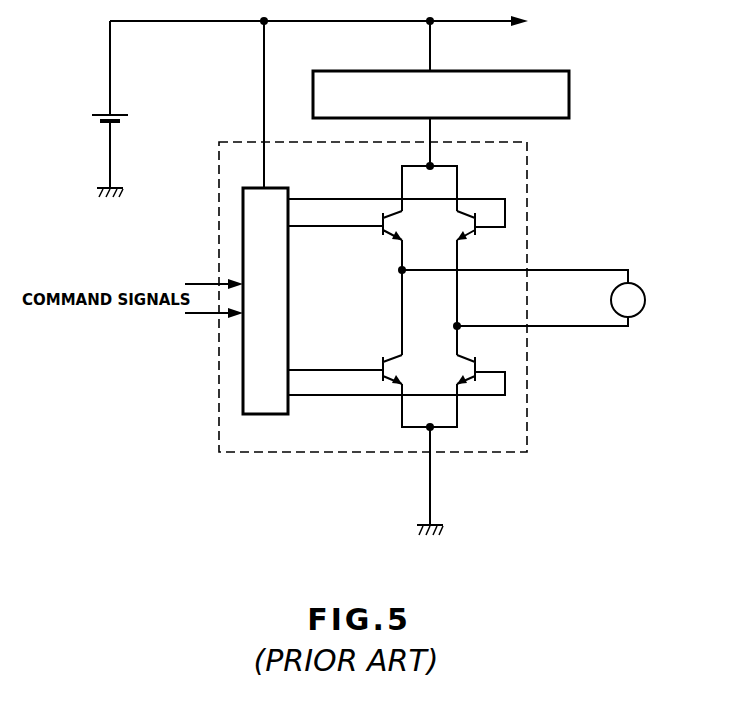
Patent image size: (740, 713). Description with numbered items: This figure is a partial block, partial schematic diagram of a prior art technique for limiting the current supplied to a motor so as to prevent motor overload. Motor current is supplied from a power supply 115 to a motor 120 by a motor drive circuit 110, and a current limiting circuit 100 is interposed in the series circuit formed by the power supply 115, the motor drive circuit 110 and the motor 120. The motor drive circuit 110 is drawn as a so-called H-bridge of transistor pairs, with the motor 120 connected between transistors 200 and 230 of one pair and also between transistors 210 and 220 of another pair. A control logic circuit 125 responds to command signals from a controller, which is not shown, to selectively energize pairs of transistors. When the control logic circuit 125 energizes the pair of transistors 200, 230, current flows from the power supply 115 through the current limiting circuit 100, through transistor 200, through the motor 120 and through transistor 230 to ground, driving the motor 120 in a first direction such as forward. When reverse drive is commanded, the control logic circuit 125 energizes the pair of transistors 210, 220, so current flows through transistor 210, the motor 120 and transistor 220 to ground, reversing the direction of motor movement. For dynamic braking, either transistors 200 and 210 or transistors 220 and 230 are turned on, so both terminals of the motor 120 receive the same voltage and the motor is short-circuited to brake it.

The current limiting circuit 100 is at (543, 71).
The motor drive circuit 110 is at (527, 205).
The power supply 115 is at (118, 112).
The motor 120 is at (645, 287).
The control logic circuit 125 is at (282, 187).
The transistor 200 is at (388, 236).
The transistor 210 is at (477, 232).
The transistor 220 is at (383, 358).
The transistor 230 is at (476, 363).